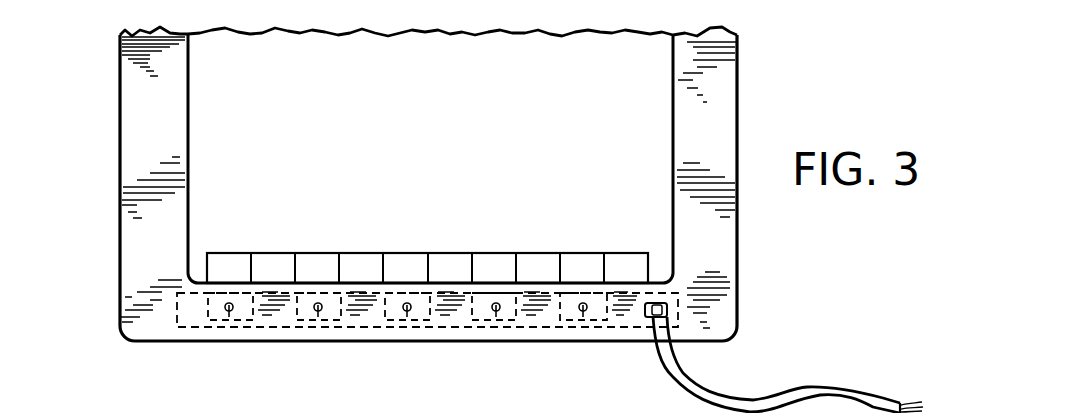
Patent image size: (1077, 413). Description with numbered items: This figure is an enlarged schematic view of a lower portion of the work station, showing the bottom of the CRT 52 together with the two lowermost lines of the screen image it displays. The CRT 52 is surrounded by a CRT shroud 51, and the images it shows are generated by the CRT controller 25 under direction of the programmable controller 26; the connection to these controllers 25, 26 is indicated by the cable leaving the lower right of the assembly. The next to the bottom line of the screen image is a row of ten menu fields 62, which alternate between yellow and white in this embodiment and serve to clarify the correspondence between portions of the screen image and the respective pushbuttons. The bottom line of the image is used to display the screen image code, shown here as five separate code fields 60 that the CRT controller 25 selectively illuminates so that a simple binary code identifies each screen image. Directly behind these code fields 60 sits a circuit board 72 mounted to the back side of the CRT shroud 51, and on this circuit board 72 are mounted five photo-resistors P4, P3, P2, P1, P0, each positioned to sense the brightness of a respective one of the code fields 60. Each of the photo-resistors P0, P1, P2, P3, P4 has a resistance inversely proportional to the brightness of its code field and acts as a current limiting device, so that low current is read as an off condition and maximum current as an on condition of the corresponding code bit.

The CRT shroud 51 is at (157, 98).
The CRT 52 is at (253, 127).
The menu fields 62 is at (207, 262).
The circuit board 72 is at (176, 307).
The photo-resistor P4 is at (229, 318).
The photo-resistor P3 is at (318, 318).
The photo-resistor P2 is at (407, 318).
The photo-resistor P1 is at (496, 318).
The photo-resistor P0 is at (582, 314).
The code fields 60 is at (593, 322).
The CRT controller 25 is at (626, 365).
The programmable controller 26 is at (330, 412).